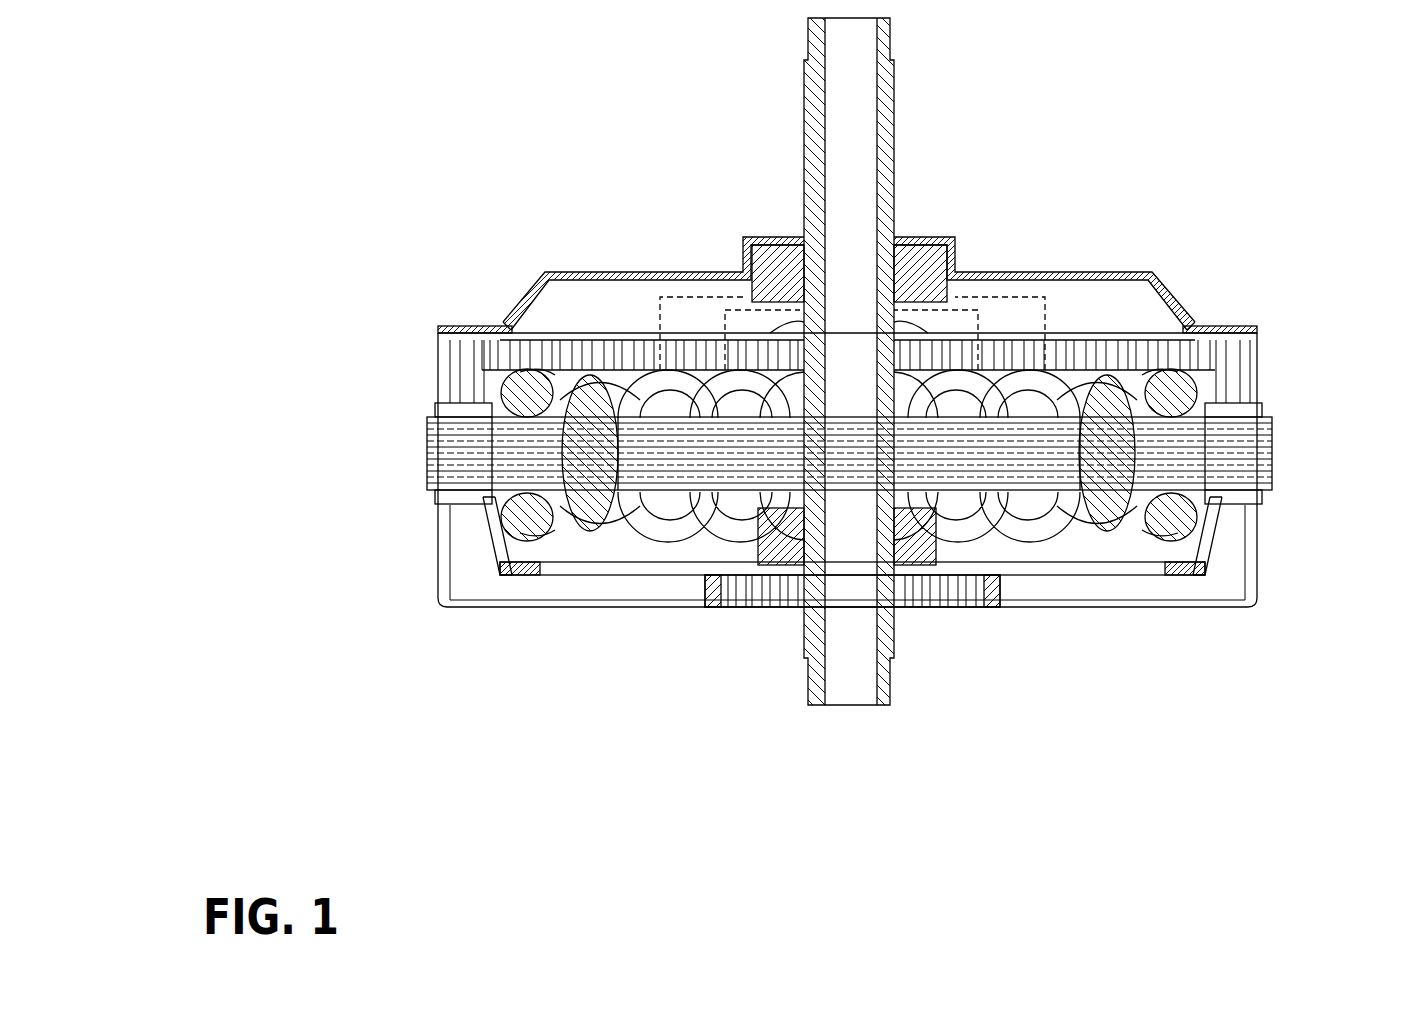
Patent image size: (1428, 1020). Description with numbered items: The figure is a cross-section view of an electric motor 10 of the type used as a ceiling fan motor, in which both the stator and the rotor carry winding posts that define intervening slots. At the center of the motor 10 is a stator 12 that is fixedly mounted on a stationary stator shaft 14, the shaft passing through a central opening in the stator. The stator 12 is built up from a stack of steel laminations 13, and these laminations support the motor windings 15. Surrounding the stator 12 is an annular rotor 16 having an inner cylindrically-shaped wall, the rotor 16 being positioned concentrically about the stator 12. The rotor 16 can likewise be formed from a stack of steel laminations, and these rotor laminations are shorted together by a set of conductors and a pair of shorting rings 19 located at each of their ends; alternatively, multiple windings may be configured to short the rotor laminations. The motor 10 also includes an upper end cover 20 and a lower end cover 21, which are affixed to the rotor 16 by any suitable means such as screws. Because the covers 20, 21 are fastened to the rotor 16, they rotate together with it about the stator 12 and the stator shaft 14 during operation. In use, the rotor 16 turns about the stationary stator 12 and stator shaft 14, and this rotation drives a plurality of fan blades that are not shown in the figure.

The electric motor 10 is at (1185, 225).
The stator 12 is at (1003, 470).
The steel laminations 13 is at (686, 477).
The stator shaft 14 is at (895, 100).
The motor windings 15 is at (595, 494).
The rotor 16 is at (1250, 443).
The shorting rings 19 is at (1265, 410).
The upper end cover 20 is at (527, 290).
The lower end cover 21 is at (530, 607).